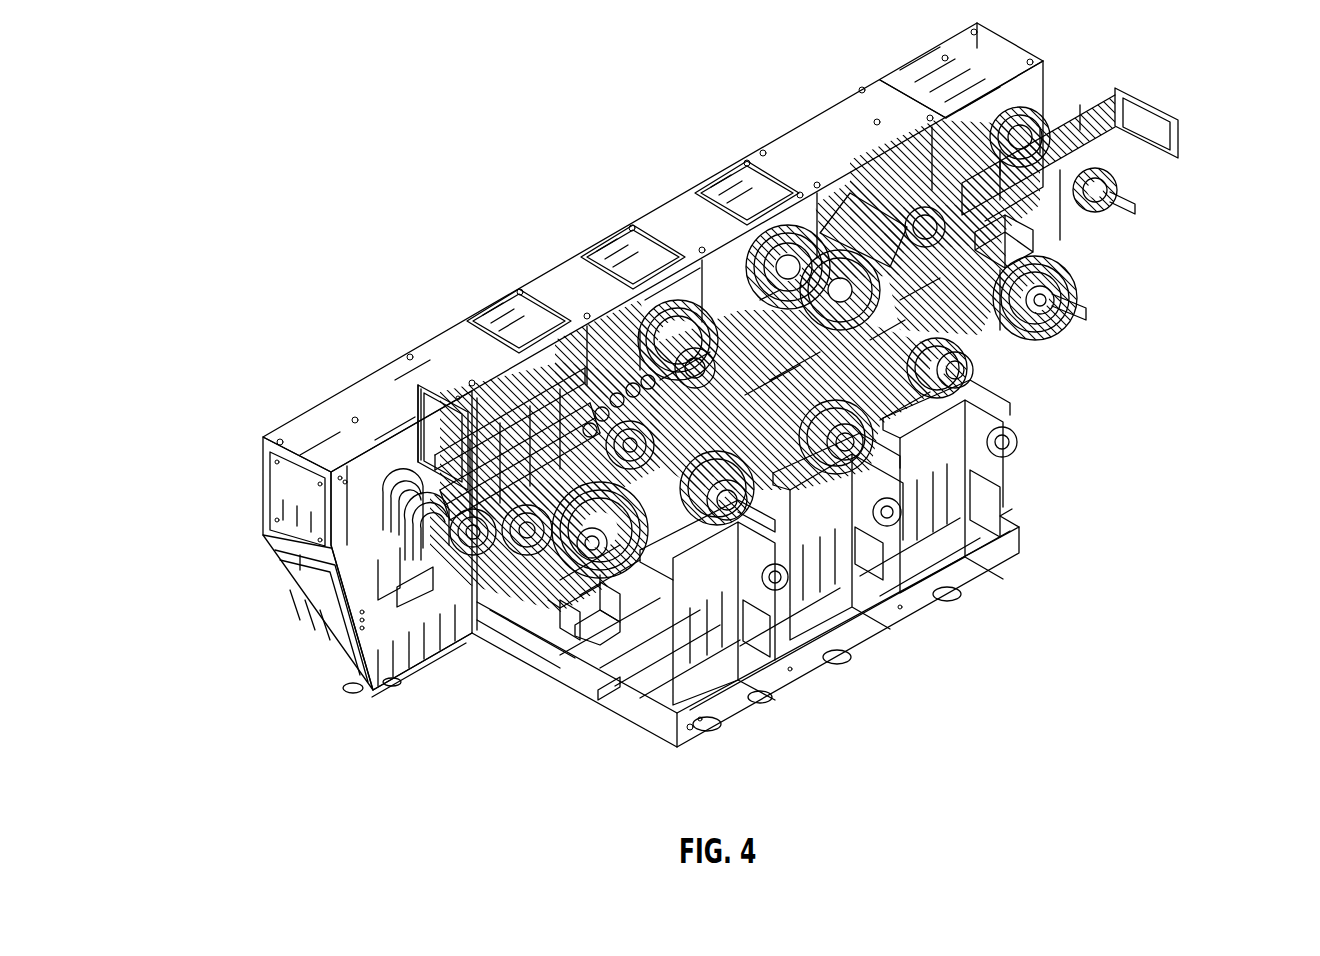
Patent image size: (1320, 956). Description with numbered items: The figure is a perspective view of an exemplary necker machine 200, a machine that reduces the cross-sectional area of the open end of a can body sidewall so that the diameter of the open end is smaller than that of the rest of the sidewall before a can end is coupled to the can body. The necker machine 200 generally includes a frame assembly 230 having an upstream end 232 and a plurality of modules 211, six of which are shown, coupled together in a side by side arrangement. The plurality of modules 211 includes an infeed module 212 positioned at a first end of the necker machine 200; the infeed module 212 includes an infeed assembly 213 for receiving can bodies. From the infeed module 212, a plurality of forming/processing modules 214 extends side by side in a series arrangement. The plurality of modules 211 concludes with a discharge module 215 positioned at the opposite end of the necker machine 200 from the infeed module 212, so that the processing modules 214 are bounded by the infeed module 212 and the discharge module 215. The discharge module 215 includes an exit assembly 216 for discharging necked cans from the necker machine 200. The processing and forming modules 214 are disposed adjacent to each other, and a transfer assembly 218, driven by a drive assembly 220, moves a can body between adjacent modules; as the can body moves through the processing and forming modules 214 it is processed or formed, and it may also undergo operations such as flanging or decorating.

The necker machine 200 is at (428, 96).
The modules 211 is at (662, 174).
The infeed module 212 is at (317, 424).
The infeed assembly 213 is at (482, 398).
The forming/processing modules 214 is at (796, 109).
The discharge module 215 is at (922, 76).
The exit assembly 216 is at (1158, 82).
The transfer assembly 218 is at (567, 704).
The drive assembly 220 is at (1062, 325).
The frame assembly 230 is at (418, 668).
The upstream end 232 is at (255, 496).